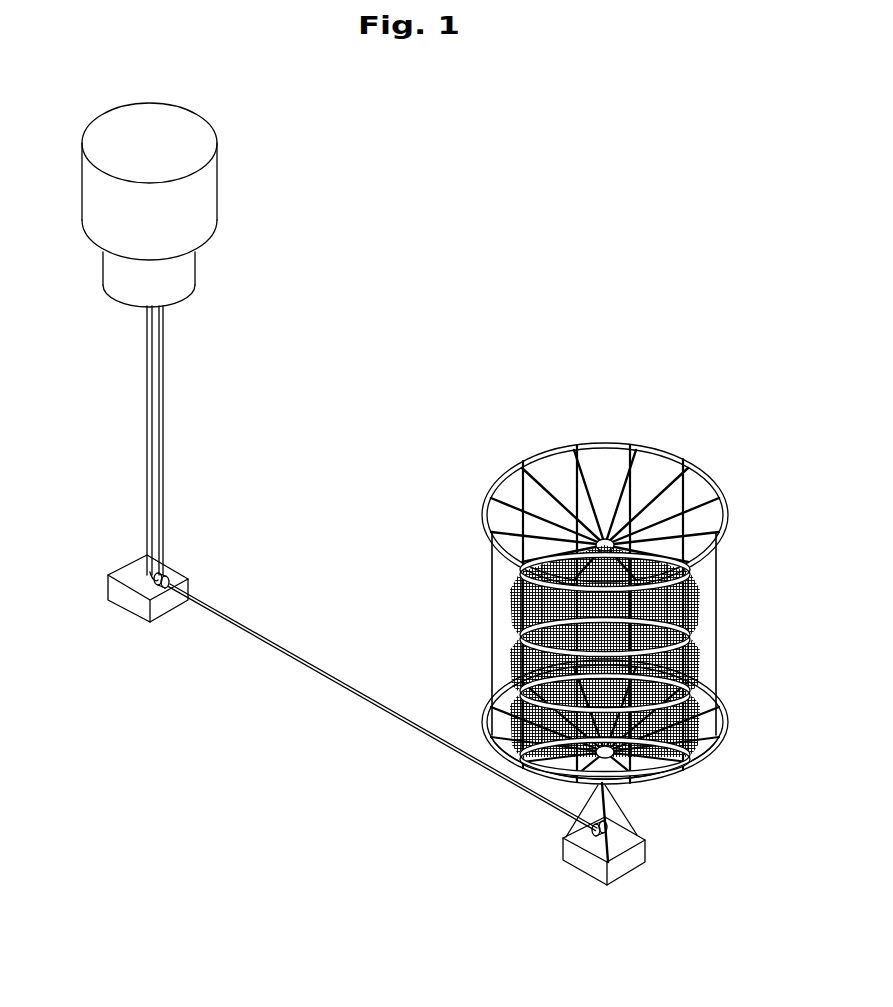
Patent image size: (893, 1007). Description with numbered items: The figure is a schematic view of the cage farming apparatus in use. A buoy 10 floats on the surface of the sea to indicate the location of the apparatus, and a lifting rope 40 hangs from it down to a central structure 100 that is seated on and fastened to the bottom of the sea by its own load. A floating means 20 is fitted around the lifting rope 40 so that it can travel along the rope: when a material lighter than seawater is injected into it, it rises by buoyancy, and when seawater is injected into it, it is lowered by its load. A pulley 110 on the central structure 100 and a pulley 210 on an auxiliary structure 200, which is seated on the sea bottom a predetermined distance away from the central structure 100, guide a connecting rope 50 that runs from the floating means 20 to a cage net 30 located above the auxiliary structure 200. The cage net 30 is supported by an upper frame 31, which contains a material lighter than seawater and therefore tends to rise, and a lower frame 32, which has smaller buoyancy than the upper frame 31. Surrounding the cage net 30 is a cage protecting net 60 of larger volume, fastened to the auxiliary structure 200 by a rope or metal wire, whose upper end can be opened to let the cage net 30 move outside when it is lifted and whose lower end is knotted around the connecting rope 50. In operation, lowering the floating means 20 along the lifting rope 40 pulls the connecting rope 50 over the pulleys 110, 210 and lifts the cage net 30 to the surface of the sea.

The buoy 10 is at (200, 200).
The floating means 20 is at (183, 277).
The lifting rope 40 is at (148, 385).
The connecting rope 50 is at (163, 437).
The central structure 100 is at (112, 590).
The pulley 110 is at (170, 578).
The cage protecting net 60 is at (490, 573).
The cage net 30 is at (700, 665).
The upper frame 31 is at (692, 622).
The lower frame 32 is at (700, 745).
The auxiliary structure 200 is at (583, 863).
The pulley 210 is at (563, 838).